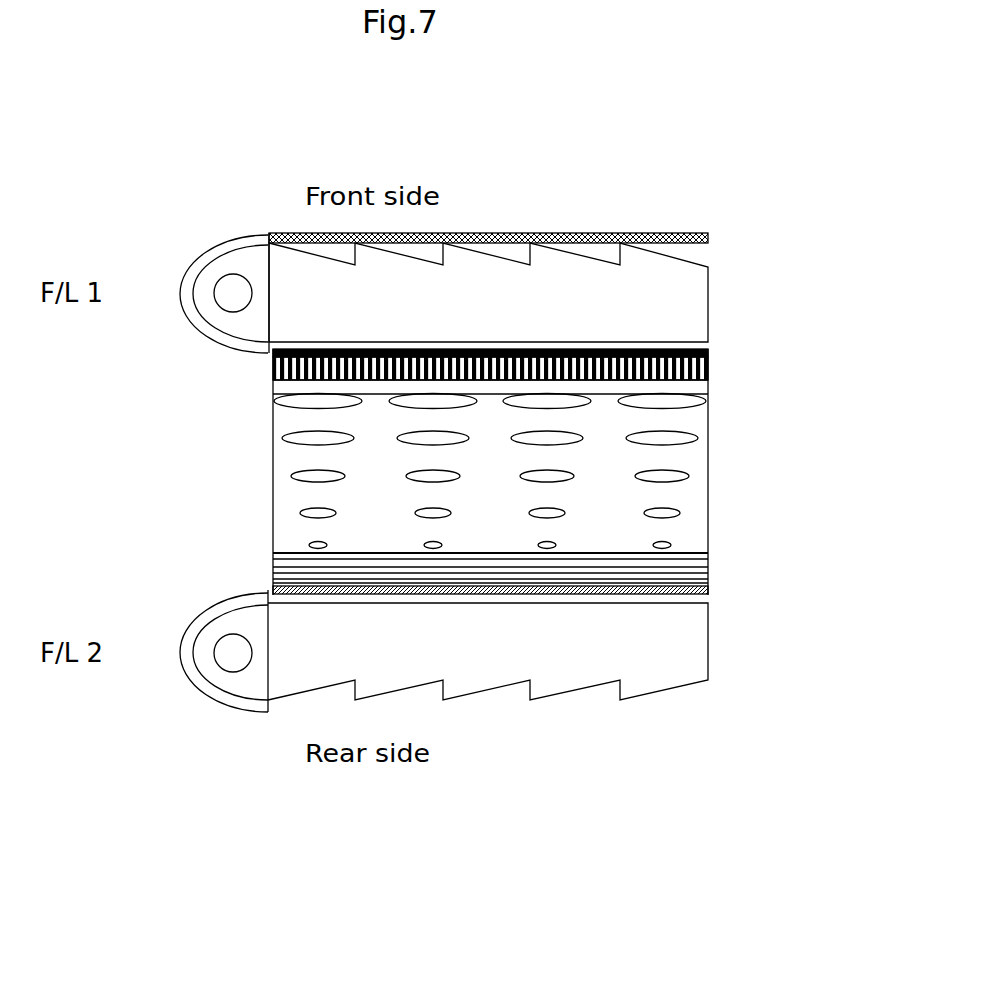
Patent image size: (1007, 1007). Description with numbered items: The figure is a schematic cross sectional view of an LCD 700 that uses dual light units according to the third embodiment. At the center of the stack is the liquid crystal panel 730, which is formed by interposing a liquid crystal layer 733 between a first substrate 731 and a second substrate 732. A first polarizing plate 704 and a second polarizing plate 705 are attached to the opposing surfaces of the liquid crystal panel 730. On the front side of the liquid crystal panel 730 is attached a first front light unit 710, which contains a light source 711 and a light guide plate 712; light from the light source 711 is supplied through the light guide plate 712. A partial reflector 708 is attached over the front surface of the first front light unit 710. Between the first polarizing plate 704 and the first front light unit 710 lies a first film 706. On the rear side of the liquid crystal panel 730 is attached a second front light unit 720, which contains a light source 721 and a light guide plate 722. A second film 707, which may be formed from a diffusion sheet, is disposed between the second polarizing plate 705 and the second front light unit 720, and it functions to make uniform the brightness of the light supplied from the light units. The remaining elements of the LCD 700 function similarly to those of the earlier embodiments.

The LCD 700 is at (852, 350).
The first front light unit 710 is at (244, 221).
The light source 711 is at (232, 290).
The partial reflector 708 is at (708, 237).
The light guide plate 712 is at (708, 277).
The first film 706 is at (708, 353).
The first polarizing plate 704 is at (273, 368).
The liquid crystal panel 730 is at (818, 395).
The second substrate 732 is at (708, 388).
The liquid crystal layer 733 is at (708, 485).
The first substrate 731 is at (712, 557).
The second polarizing plate 705 is at (708, 573).
The second film 707 is at (708, 591).
The second front light unit 720 is at (553, 730).
The light source 721 is at (231, 657).
The light guide plate 722 is at (708, 668).